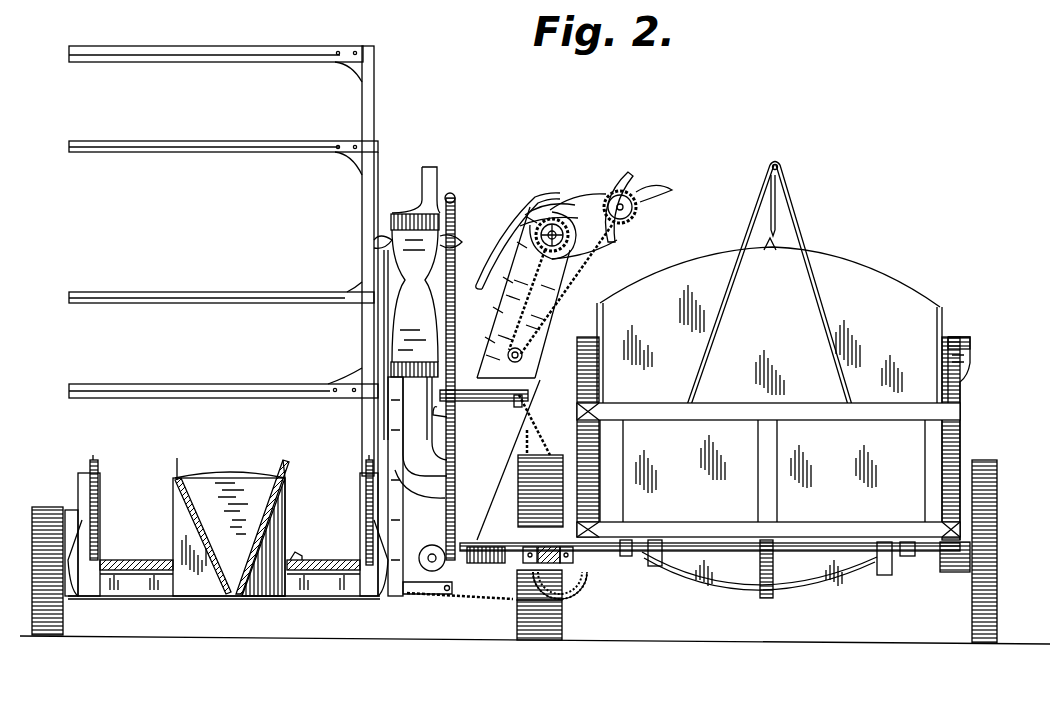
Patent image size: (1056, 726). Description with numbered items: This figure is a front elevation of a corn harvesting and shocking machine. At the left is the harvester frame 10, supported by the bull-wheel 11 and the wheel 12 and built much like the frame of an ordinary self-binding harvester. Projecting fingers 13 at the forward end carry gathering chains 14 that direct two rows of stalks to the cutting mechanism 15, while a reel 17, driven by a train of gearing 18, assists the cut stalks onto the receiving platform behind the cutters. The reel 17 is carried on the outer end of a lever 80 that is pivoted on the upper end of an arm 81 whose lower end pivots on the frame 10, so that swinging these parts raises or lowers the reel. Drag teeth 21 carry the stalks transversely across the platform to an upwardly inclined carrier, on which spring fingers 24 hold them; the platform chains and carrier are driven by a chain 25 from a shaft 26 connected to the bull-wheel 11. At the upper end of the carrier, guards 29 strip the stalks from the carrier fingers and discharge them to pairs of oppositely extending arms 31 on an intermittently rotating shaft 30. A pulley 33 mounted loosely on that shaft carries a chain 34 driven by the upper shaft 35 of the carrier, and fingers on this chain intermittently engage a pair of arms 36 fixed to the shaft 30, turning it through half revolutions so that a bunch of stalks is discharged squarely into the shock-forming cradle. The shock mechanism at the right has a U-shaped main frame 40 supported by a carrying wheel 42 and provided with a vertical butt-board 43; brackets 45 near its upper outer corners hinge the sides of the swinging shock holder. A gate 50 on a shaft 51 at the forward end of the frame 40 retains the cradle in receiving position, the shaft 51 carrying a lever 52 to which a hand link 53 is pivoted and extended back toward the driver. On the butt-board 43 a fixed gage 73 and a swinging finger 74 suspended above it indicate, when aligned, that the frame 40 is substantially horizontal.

The harvester frame 10 is at (140, 592).
The bull-wheel 11 is at (540, 622).
The wheel 12 is at (45, 507).
The projecting fingers 13 is at (100, 512).
The gathering chains 14 is at (177, 466).
The cutting mechanism 15 is at (128, 562).
The reel 17 is at (220, 46).
The train of gearing 18 is at (454, 240).
The drag teeth 21 is at (298, 554).
The spring fingers 24 is at (525, 228).
The chain 25 is at (475, 602).
The shaft 26 is at (590, 592).
The guards 29 is at (565, 210).
The intermittently rotating shaft 30 is at (632, 204).
The arms 31 is at (668, 195).
The pulley 33 is at (636, 218).
The chain 34 is at (595, 256).
The upper shaft 35 is at (552, 233).
The arms 36 is at (626, 185).
The main frame 40 is at (852, 537).
The carrying wheel 42 is at (990, 472).
The butt-board 43 is at (865, 276).
The bracket 45 is at (963, 340).
The gate 50 is at (733, 568).
The shaft 51 is at (506, 547).
The lever 52 is at (445, 498).
The hand link 53 is at (440, 286).
The fixed gage 73 is at (778, 250).
The swinging finger 74 is at (775, 205).
The lever 80 is at (430, 168).
The arm 81 is at (408, 318).